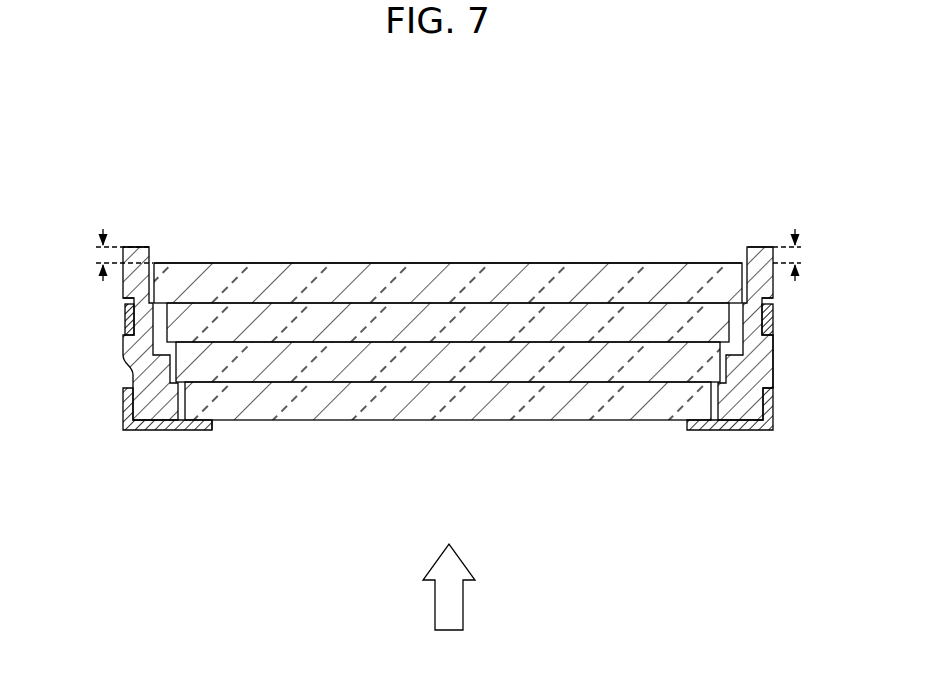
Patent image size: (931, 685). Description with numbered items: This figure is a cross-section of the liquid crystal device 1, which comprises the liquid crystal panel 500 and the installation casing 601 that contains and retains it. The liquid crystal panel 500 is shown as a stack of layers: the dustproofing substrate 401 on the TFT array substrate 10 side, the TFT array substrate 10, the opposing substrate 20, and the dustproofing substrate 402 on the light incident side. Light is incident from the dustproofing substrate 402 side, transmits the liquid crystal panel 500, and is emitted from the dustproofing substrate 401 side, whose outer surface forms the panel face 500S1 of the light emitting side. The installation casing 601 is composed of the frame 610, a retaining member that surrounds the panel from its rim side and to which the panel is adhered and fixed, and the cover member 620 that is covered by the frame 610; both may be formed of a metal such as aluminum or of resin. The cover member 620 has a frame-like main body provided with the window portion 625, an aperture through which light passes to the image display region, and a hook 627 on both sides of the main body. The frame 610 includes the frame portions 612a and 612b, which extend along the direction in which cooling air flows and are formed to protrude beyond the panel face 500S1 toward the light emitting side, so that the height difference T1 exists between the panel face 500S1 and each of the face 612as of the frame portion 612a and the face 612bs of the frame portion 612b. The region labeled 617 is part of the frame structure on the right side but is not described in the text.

The liquid crystal device 1 is at (513, 140).
The liquid crystal panel 500 is at (517, 234).
The dustproofing substrate 401 is at (398, 273).
The TFT array substrate 10 is at (293, 318).
The opposing substrate 20 is at (343, 365).
The dustproofing substrate 402 is at (452, 405).
The panel face 500S1 is at (635, 263).
The installation casing 601 is at (50, 350).
The frame 610 is at (126, 362).
The cover member 620 is at (126, 411).
The window portion 625 is at (210, 429).
The frame portion 612a is at (123, 298).
The frame portion 612b is at (771, 298).
The face of the light emitting side of the frame portion 612as is at (133, 241).
The face of the light emitting side of the frame portion 612bs is at (765, 241).
The frame side wall 617 is at (768, 354).
The hook 627 is at (127, 318).
The height difference T1 is at (100, 250).